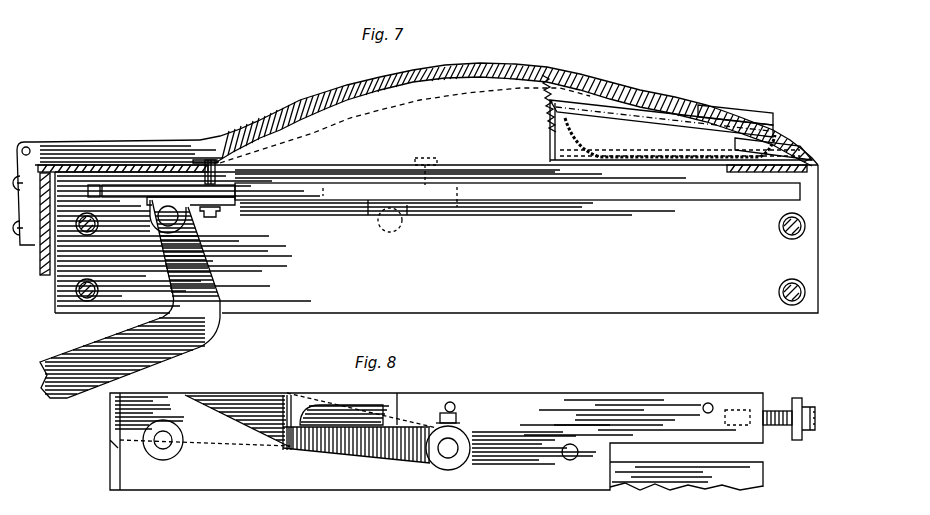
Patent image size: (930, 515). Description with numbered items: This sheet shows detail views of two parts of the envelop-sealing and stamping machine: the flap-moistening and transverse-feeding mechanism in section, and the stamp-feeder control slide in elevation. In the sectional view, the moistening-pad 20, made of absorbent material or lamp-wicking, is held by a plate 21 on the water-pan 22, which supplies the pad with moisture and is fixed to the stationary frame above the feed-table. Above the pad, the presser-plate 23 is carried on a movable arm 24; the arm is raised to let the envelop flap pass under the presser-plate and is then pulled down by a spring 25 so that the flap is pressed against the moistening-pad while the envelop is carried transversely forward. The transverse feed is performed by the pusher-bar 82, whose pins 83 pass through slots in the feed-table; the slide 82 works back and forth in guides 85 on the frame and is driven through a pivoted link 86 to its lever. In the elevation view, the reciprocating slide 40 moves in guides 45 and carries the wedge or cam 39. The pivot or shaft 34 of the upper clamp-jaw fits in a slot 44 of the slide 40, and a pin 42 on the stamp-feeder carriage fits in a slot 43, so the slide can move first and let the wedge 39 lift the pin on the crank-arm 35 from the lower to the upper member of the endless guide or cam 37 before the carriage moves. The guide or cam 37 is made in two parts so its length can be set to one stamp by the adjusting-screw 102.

In FIG. 7, the moistening-pad 20 is at (752, 142).
In FIG. 7, the plate 21 is at (735, 140).
In FIG. 7, the water-pan 22 is at (592, 124).
In FIG. 7, the presser-plate 23 is at (714, 110).
In FIG. 7, the movable arm 24 is at (493, 64).
In FIG. 7, the spring 25 is at (556, 92).
In FIG. 7, the pusher-bar 82 is at (137, 190).
In FIG. 7, the pins 83 is at (266, 157).
In FIG. 7, the guides 85 is at (345, 192).
In FIG. 7, the pivoted link 86 is at (143, 299).
In FIG. 8, the pivot or shaft 34 is at (452, 446).
In FIG. 8, the crank-arm 35 is at (300, 450).
In FIG. 8, the endless guide or cam 37 is at (323, 407).
In FIG. 8, the wedge or cam 39 is at (233, 435).
In FIG. 8, the reciprocating slide 40 is at (156, 403).
In FIG. 8, the pin 42 is at (573, 450).
In FIG. 8, the slot 43 is at (522, 447).
In FIG. 8, the slot 44 is at (397, 437).
In FIG. 8, the guides 45 is at (708, 390).
In FIG. 8, the adjusting-screw 102 is at (778, 411).